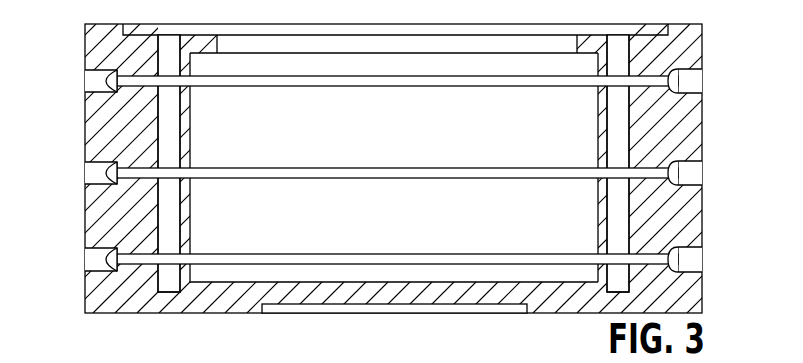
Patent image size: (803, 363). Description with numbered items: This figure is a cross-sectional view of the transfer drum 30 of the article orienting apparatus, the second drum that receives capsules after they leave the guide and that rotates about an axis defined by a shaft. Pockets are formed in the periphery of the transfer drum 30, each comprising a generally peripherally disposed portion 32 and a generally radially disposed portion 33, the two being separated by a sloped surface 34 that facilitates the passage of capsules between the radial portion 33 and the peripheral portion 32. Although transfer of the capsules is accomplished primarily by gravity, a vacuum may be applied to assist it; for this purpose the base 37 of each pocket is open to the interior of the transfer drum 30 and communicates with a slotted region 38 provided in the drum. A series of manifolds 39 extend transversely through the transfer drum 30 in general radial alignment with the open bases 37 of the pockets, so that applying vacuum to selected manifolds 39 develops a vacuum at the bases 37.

The transfer drum 30 is at (95, 138).
The peripherally disposed portion 32 is at (85, 84).
The radially disposed portion 33 is at (107, 70).
The sloped surface 34 is at (104, 97).
The base 37 is at (118, 248).
The slotted region 38 is at (370, 259).
The manifolds 39 is at (172, 130).